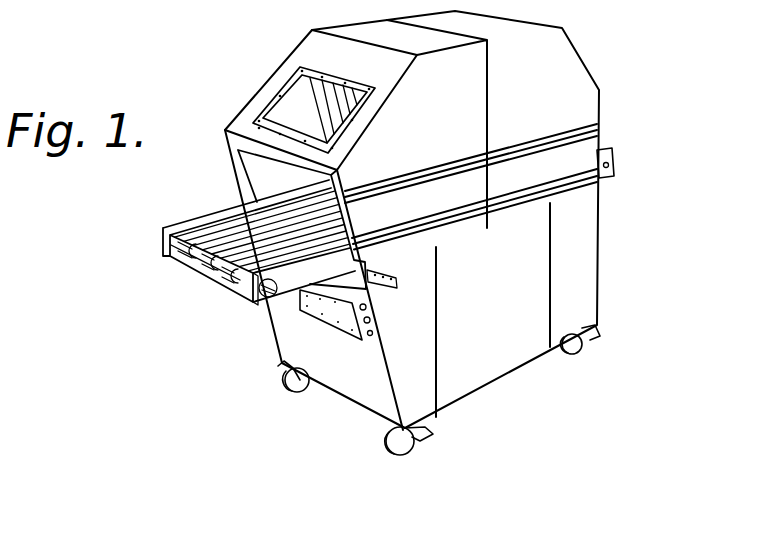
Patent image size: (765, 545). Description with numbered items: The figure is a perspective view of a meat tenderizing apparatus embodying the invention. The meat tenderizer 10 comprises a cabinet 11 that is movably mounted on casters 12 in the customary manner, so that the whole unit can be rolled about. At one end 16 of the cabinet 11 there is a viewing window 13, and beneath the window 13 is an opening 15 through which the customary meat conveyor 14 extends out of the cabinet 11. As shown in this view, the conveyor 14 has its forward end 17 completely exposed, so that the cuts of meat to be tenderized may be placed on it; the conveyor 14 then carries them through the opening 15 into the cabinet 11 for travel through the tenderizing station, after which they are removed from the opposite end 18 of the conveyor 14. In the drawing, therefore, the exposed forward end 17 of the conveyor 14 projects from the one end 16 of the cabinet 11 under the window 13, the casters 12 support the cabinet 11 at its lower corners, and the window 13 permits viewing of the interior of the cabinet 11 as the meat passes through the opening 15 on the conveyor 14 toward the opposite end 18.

The meat tenderizer 10 is at (595, 66).
The cabinet 11 is at (510, 300).
The casters 12 is at (295, 391).
The viewing window 13 is at (305, 95).
The meat conveyor 14 is at (195, 272).
The opening 15 is at (248, 175).
The one end of the cabinet 16 is at (286, 323).
The forward end of the conveyor 17 is at (240, 237).
The opposite end of the conveyor 18 is at (604, 152).